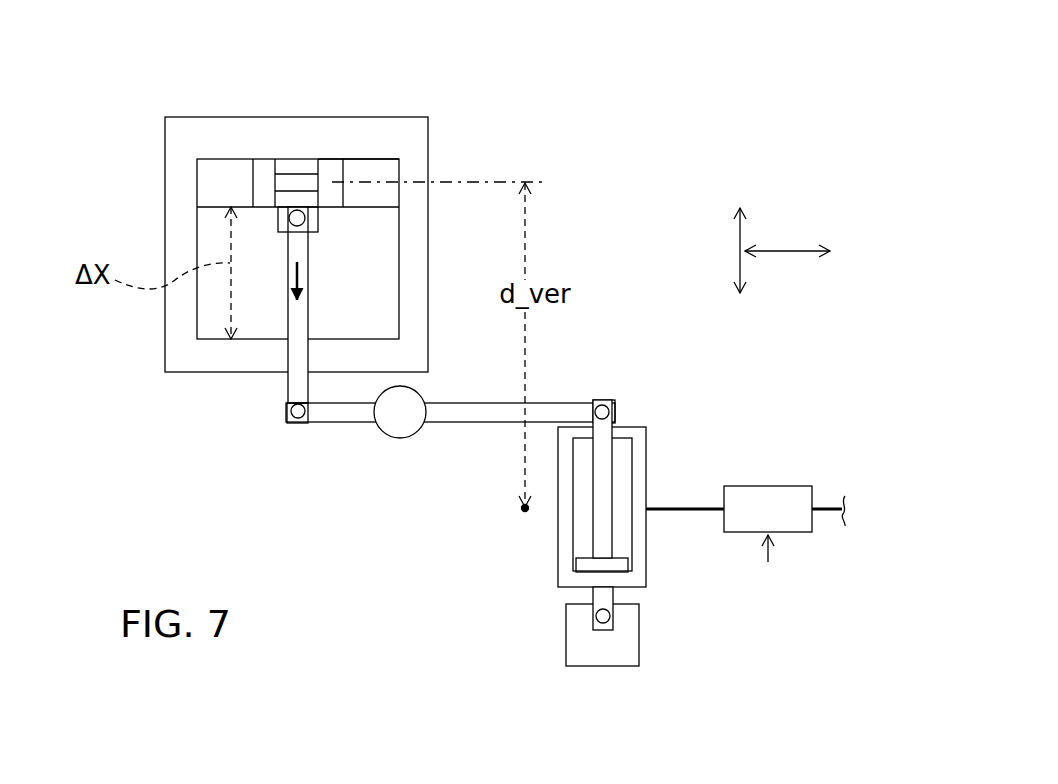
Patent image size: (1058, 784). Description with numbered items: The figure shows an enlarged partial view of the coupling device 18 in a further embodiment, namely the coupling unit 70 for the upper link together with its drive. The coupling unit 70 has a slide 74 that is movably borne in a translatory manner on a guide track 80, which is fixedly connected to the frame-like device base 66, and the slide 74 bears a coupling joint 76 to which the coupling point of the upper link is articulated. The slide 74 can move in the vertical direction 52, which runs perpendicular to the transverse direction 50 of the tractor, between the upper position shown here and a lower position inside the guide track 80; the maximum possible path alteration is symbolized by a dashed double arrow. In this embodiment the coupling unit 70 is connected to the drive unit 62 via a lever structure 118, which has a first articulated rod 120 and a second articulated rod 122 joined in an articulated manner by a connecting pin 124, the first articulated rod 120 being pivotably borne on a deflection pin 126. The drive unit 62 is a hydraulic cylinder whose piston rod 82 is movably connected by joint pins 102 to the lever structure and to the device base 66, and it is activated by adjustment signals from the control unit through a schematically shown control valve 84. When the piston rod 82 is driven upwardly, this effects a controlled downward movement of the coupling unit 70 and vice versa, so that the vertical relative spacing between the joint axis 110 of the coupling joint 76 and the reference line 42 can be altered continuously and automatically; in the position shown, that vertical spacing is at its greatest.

The coupling device 18 is at (634, 661).
The reference line 42 is at (523, 510).
The transverse direction 50 is at (800, 250).
The vertical direction 52 is at (740, 263).
The drive unit 62 is at (655, 543).
The device base 66 is at (630, 646).
The coupling unit 70 is at (342, 190).
The slide 74 is at (367, 170).
The coupling joint 76 is at (298, 165).
The guide track 80 is at (414, 268).
The piston rod 82 is at (605, 453).
The control valve 84 is at (752, 520).
The joint pin 102 is at (603, 406).
The joint axis 110 is at (490, 180).
The lever structure 118 is at (435, 442).
The first articulated rod 120 is at (478, 423).
The second articulated rod 122 is at (295, 378).
The connecting pin 124 is at (297, 420).
The deflection pin 126 is at (405, 401).